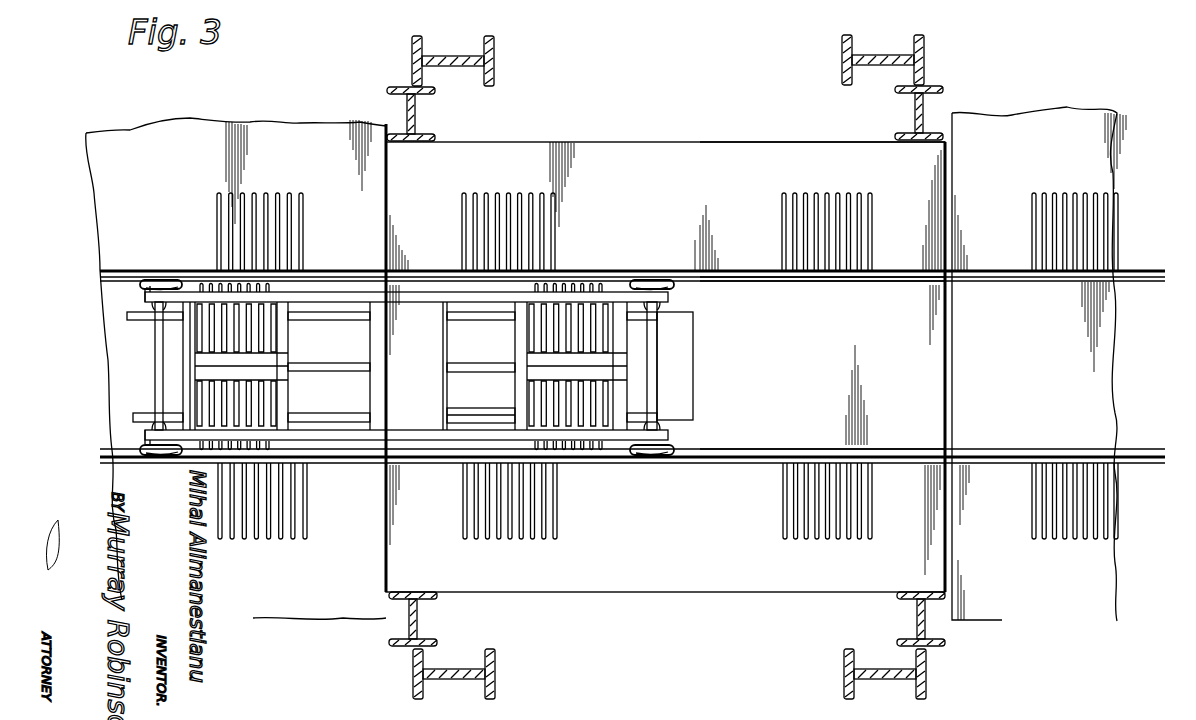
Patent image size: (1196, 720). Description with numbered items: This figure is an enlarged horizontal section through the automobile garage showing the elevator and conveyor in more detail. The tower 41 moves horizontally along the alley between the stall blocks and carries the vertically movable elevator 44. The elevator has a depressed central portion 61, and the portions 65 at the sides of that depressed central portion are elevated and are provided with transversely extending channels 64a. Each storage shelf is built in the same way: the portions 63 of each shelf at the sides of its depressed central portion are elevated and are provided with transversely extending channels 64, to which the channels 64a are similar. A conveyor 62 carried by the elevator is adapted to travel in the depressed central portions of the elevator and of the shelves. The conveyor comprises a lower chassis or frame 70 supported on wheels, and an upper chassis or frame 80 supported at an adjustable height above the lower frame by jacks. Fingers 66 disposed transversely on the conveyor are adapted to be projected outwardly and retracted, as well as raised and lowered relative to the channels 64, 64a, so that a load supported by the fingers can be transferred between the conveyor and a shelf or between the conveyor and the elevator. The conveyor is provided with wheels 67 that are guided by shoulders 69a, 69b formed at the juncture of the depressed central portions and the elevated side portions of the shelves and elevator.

The tower 41 is at (493, 50).
The elevator 44 is at (684, 135).
The depressed central portion 61 is at (808, 392).
The conveyor 62 is at (697, 336).
The portions of each shelf 63 is at (110, 245).
The channels 64 is at (298, 236).
The channels 64a is at (540, 229).
The portions 65 is at (760, 150).
The fingers 66 is at (268, 395).
The wheels 67 is at (140, 283).
The shoulder 69a is at (140, 452).
The shoulder 69b is at (793, 278).
The lower chassis or frame 70 is at (478, 415).
The upper chassis or frame 80 is at (427, 297).